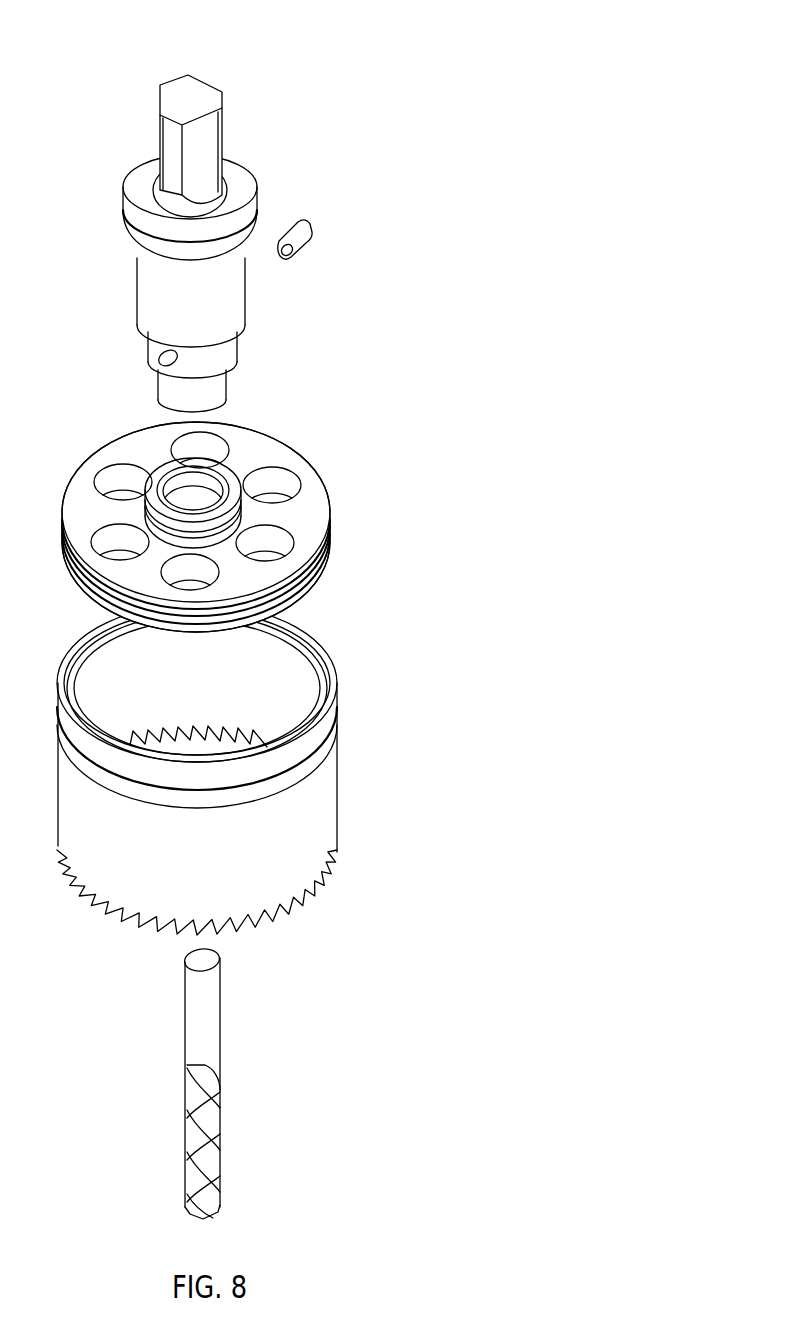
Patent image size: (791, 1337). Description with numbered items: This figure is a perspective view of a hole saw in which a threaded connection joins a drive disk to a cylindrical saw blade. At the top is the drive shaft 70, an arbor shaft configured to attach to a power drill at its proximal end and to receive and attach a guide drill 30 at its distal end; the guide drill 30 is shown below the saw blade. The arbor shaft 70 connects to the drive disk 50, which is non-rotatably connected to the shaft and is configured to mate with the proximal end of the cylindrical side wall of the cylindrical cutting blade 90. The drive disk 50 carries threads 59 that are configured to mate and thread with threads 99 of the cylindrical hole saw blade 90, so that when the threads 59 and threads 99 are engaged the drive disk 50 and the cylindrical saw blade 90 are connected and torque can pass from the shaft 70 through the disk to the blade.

The guide drill 30 is at (205, 1018).
The drive disk 50 is at (262, 507).
The threads 59 is at (313, 577).
The drive shaft 70 is at (200, 97).
The cylindrical cutting blade 90 is at (307, 808).
The threads 99 is at (300, 603).